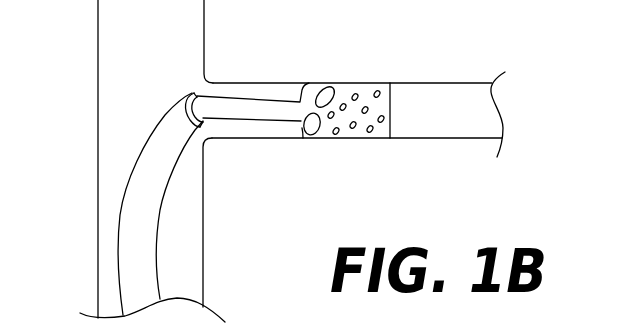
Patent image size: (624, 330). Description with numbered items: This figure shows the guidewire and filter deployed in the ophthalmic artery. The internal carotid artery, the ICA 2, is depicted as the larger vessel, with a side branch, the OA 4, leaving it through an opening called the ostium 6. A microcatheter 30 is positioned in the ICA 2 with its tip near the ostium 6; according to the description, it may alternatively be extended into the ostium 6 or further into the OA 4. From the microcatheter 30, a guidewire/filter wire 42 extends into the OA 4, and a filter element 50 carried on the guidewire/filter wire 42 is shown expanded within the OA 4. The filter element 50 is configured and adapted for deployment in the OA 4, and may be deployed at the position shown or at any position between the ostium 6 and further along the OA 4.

The ICA 2 is at (97, 17).
The OA 4 is at (459, 83).
The ostium 6 is at (207, 76).
The microcatheter 30 is at (133, 182).
The guidewire/filter wire 42 is at (259, 115).
The filter element 50 is at (381, 139).